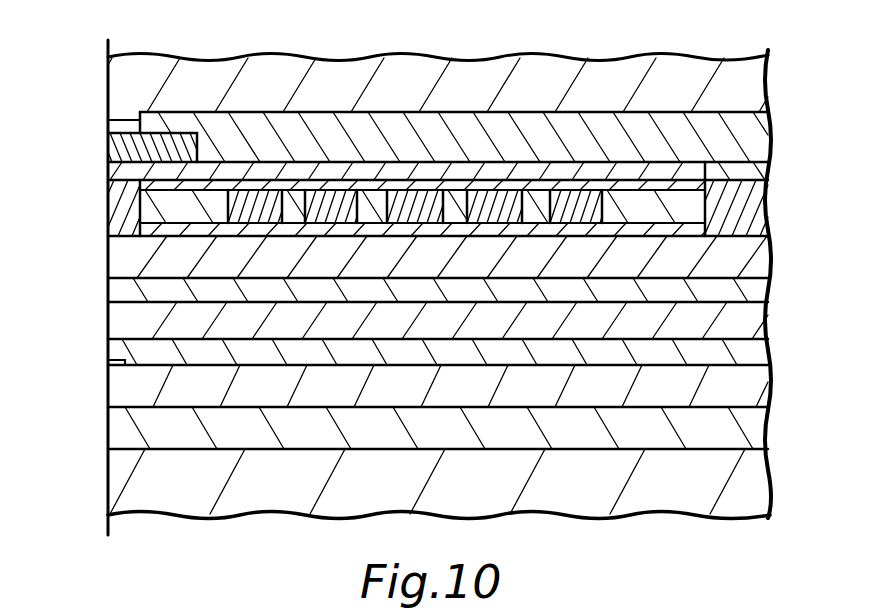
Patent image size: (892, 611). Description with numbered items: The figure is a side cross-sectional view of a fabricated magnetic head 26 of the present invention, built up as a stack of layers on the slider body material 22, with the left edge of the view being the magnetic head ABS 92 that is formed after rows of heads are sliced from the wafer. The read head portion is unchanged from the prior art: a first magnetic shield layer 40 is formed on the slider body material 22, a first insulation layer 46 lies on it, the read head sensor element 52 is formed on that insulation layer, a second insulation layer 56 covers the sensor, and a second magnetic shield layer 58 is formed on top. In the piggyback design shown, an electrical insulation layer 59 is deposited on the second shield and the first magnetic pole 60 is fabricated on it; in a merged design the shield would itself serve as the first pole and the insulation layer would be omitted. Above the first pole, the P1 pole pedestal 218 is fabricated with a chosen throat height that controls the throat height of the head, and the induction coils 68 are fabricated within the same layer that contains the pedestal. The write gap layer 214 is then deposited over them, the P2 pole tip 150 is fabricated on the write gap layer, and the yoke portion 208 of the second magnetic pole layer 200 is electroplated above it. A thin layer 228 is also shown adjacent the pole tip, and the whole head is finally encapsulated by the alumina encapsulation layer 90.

The second magnetic pole layer 200 is at (257, 50).
The magnetic head 26 is at (352, 44).
The magnetic head ABS 92 is at (108, 45).
The alumina encapsulation layer 90 is at (620, 100).
The yoke portion 208 is at (438, 113).
The thin cap layer 228 is at (108, 121).
The P2 pole tip 150 is at (118, 151).
The write gap layer 214 is at (118, 171).
The P1 pole pedestal 218 is at (405, 228).
The induction coils 68 is at (398, 238).
The first magnetic pole 60 is at (118, 255).
The electrical insulation layer 59 is at (118, 290).
The second magnetic shield layer 58 is at (118, 315).
The second insulation layer 56 is at (118, 350).
The read head sensor element 52 is at (108, 362).
The first insulation layer 46 is at (118, 392).
The first magnetic shield layer 40 is at (120, 428).
The slider body material 22 is at (286, 494).